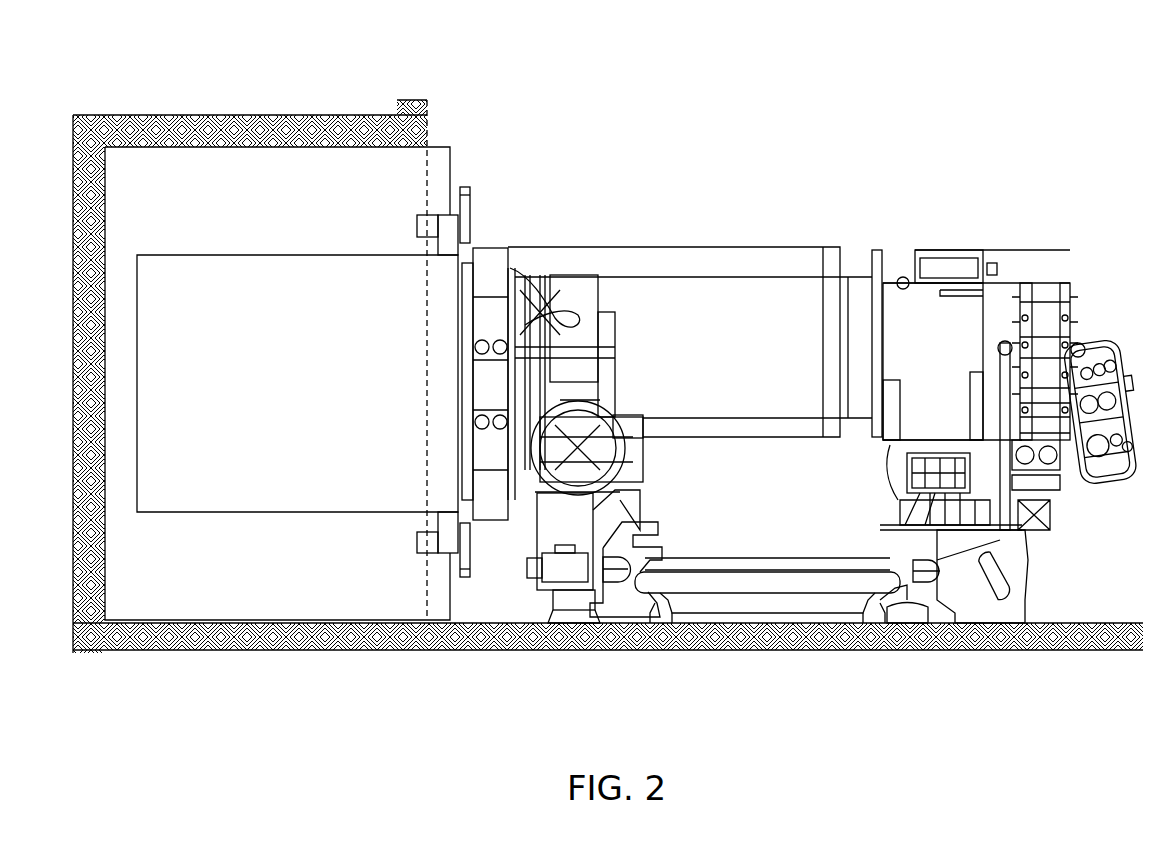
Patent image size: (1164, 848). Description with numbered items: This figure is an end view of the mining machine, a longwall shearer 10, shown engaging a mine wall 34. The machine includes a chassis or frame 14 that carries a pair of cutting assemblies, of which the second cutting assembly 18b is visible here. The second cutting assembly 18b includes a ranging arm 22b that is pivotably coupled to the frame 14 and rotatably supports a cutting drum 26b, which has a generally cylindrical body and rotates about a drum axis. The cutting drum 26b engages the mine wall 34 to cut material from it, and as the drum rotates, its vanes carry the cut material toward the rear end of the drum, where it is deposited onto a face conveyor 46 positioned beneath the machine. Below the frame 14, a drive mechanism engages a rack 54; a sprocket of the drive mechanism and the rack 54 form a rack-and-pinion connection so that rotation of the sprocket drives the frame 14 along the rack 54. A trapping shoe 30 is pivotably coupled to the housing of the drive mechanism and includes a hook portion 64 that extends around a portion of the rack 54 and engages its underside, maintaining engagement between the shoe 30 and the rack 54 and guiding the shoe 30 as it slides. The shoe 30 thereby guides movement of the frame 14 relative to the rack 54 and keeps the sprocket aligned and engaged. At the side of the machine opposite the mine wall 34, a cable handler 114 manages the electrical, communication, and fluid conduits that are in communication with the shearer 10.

The longwall shearer 10 is at (712, 95).
The frame 14 is at (738, 300).
The second cutting assembly 18b is at (491, 230).
The ranging arm 22b is at (497, 505).
The cutting drum 26b is at (252, 493).
The trapping shoe 30 is at (940, 450).
The mine wall 34 is at (212, 152).
The face conveyor 46 is at (728, 556).
The rack 54 is at (912, 480).
The hook portion 64 is at (903, 508).
The cable handler 114 is at (1053, 493).